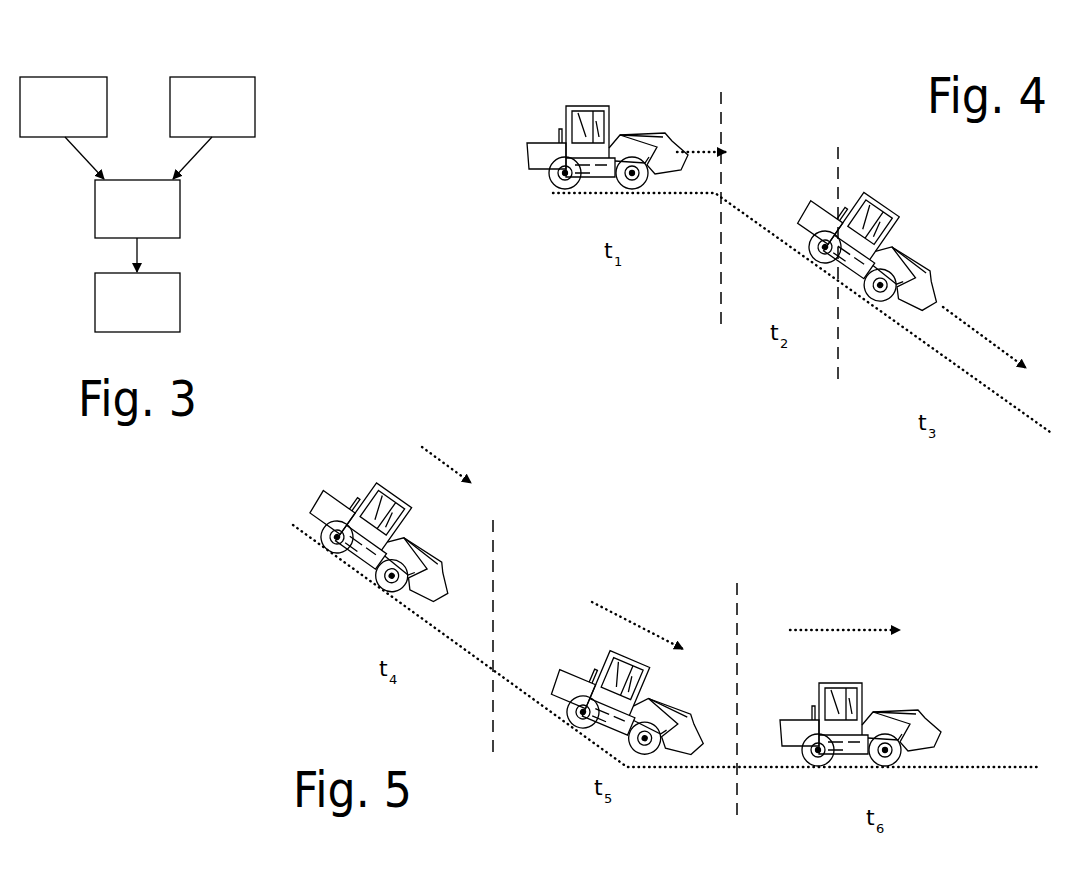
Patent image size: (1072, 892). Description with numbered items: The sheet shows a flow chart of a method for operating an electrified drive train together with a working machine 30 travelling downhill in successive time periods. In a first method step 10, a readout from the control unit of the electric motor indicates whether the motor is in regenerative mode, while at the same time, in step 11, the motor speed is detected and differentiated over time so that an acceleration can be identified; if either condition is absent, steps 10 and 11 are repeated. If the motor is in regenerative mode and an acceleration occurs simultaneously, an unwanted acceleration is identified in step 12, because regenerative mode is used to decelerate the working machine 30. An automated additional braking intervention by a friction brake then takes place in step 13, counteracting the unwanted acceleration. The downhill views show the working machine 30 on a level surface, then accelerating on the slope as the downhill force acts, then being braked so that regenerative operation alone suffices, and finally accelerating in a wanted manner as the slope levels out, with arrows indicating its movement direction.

In FIG. 3, the first method step 10 is at (52, 97).
In FIG. 3, the step 11 is at (216, 97).
In FIG. 3, the step 12 is at (165, 221).
In FIG. 3, the step 13 is at (165, 313).
In FIG. 4, the working machine 30 is at (584, 99).